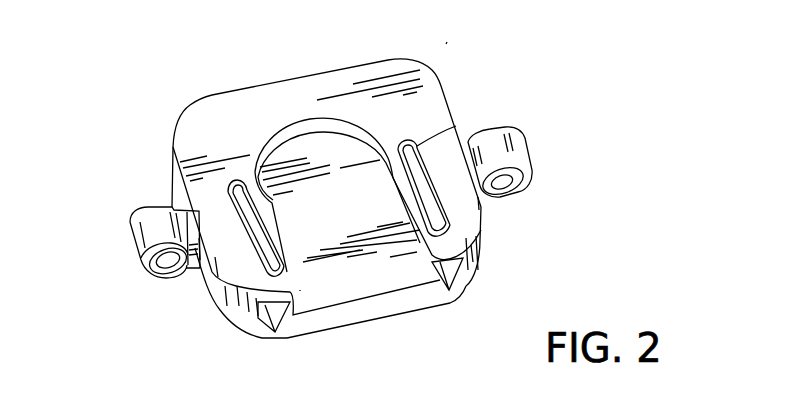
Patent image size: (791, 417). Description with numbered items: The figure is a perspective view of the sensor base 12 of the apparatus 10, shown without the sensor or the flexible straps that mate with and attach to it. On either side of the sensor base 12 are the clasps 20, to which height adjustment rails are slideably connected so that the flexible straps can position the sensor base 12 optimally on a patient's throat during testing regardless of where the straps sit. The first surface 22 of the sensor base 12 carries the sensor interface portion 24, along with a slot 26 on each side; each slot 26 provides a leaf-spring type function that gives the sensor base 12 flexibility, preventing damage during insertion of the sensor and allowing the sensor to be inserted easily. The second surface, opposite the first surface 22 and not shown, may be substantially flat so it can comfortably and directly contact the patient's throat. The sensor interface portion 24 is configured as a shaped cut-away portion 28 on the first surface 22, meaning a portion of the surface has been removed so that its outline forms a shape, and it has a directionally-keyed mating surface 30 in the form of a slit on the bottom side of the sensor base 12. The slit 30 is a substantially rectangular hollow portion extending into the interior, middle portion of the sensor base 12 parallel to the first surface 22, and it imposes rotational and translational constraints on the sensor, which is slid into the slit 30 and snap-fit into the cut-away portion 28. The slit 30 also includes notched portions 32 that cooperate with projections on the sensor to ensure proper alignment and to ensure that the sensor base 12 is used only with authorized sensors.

The apparatus 10 is at (116, 5).
The sensor base 12 is at (449, 40).
The clasps 20 is at (140, 238).
The first surface 22 is at (211, 115).
The sensor interface portion 24 is at (350, 278).
The slot 26 is at (259, 252).
The shaped cut-away portion 28 is at (360, 130).
The directionally-keyed mating surface 30 is at (320, 308).
The notched portions 32 is at (282, 320).